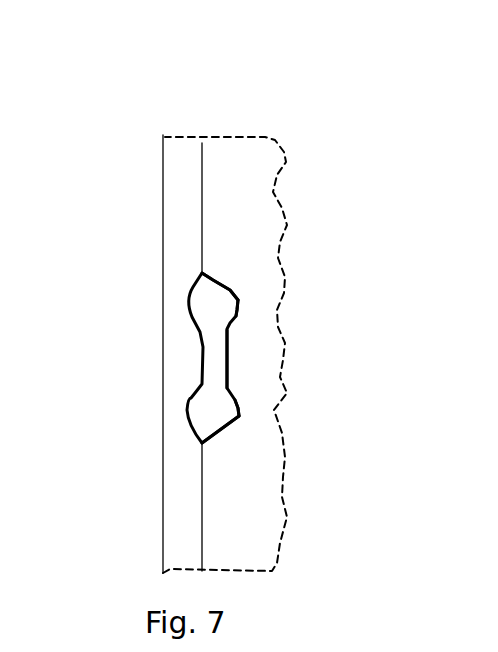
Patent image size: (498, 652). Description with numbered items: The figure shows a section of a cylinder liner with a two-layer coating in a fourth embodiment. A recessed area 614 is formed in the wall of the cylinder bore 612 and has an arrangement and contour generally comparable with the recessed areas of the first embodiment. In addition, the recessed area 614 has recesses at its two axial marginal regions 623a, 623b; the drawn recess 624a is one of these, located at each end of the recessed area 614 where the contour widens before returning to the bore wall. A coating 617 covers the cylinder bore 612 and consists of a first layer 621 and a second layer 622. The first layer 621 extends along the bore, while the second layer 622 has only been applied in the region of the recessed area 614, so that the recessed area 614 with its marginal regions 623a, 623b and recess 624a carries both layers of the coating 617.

The cylinder bore 612 is at (56, 143).
The coating 617 is at (227, 68).
The first layer 621 is at (173, 163).
The second layer 622 is at (200, 377).
The recessed area 614 is at (227, 348).
The axial marginal region 623a is at (253, 293).
The axial marginal region 623b is at (252, 429).
The recess 624a is at (233, 309).